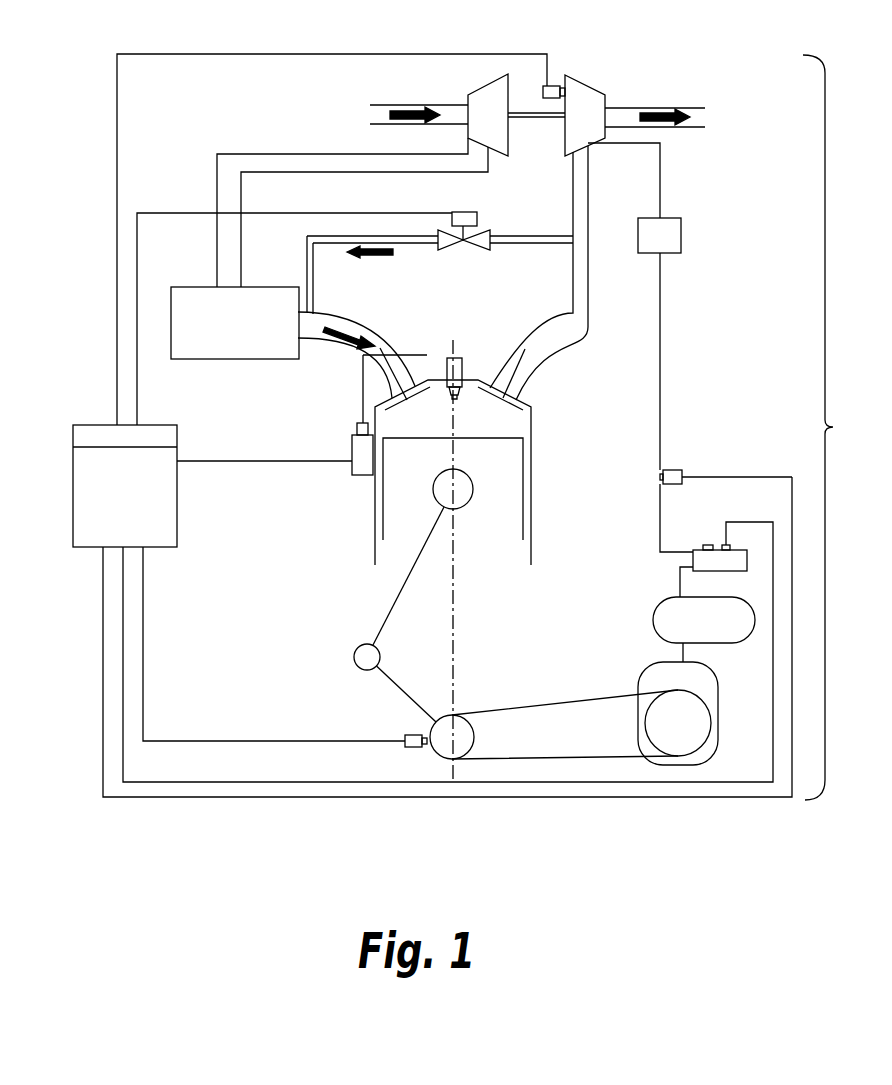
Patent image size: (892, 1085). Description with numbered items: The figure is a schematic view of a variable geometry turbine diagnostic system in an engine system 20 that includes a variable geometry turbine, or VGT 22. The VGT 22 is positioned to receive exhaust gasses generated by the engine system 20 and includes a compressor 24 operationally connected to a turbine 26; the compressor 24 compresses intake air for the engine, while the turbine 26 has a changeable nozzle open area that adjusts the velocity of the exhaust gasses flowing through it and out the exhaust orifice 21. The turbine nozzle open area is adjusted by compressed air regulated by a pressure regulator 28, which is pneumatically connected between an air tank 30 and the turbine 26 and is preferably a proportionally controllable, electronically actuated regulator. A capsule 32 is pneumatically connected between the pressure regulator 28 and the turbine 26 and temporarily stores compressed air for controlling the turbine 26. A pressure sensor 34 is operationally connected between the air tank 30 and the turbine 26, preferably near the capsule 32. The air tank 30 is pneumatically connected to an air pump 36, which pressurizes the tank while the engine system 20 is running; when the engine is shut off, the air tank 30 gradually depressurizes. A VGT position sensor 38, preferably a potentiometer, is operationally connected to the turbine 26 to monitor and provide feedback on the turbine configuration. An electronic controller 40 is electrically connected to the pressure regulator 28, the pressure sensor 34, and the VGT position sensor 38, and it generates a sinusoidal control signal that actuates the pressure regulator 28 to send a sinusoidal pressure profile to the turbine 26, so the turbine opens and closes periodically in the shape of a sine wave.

The engine system 20 is at (66, 608).
The exhaust orifice 21 is at (692, 102).
The variable geometry turbine 22 is at (833, 427).
The compressor 24 is at (488, 90).
The turbine 26 is at (590, 95).
The pressure regulator 28 is at (698, 548).
The air tank 30 is at (655, 612).
The capsule 32 is at (681, 233).
The pressure sensor 34 is at (665, 470).
The air pump 36 is at (705, 703).
The VGT position sensor 38 is at (553, 87).
The electronic controller 40 is at (172, 495).